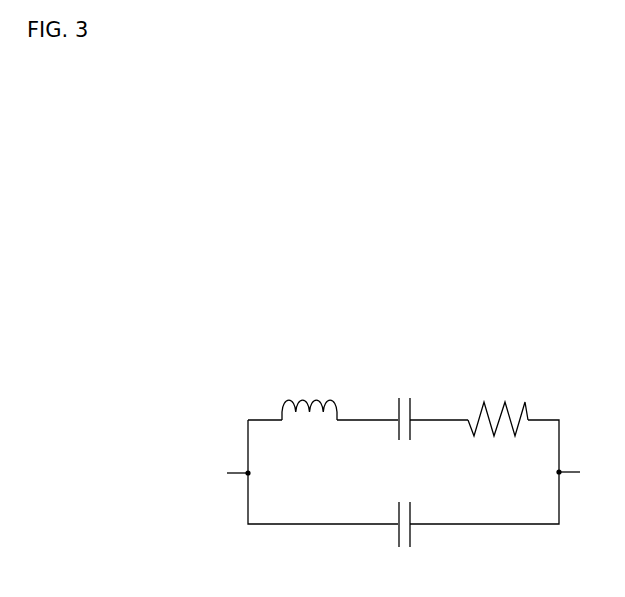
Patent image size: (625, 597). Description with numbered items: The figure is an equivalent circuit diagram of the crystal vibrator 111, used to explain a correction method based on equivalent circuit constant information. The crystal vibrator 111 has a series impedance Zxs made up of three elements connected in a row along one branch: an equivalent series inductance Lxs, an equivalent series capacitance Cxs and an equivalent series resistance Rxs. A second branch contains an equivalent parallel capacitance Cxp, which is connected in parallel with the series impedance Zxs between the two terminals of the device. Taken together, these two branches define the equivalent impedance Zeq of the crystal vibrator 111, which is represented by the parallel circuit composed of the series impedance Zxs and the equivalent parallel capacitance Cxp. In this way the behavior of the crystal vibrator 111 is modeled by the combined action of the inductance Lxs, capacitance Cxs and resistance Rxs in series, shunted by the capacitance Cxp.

The crystal vibrator 111 is at (212, 303).
The equivalent impedance Zeq is at (510, 316).
The series impedance Zxs is at (540, 367).
The equivalent series inductance Lxs is at (309, 401).
The equivalent series capacitance Cxs is at (402, 411).
The equivalent series resistance Rxs is at (498, 409).
The equivalent parallel capacitance Cxp is at (403, 534).